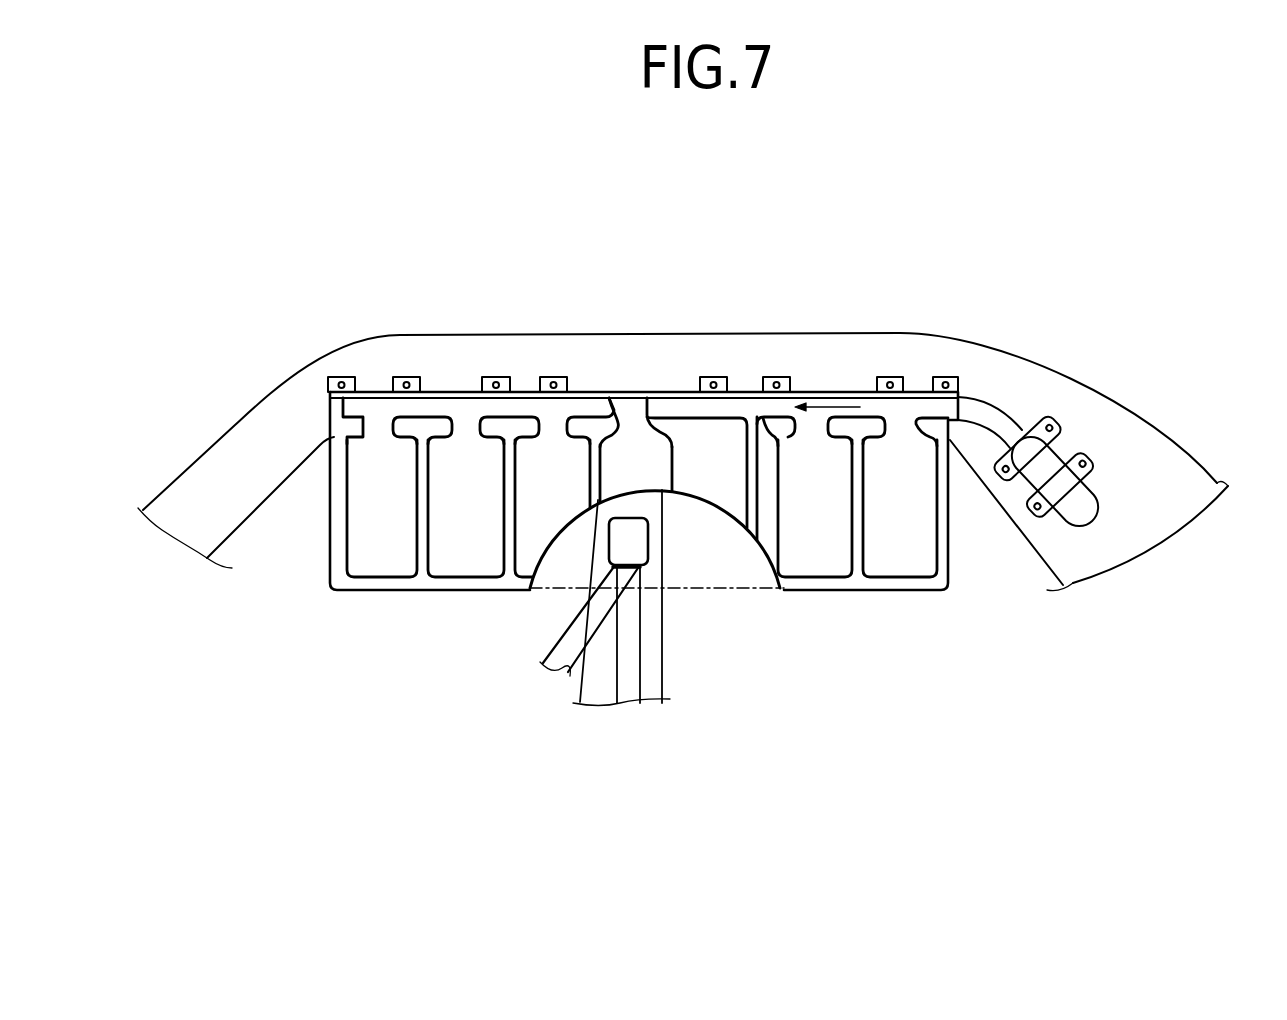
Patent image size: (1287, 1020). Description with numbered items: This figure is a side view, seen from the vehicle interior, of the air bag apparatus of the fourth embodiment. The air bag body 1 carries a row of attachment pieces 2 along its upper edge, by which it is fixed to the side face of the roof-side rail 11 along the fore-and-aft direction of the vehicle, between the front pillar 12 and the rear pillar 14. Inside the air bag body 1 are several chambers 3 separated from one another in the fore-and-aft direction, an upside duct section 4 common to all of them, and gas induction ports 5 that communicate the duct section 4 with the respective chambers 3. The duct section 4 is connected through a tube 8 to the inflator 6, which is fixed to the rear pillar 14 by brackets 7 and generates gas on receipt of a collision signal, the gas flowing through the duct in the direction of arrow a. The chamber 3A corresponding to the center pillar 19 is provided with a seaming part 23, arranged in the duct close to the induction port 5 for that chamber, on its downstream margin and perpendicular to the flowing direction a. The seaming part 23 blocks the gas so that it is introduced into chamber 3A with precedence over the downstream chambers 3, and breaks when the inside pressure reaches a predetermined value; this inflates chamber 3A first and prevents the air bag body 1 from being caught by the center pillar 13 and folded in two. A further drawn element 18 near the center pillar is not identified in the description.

The air bag body 1 is at (410, 598).
The attachment pieces 2 is at (346, 377).
The chambers 3 is at (400, 550).
The chamber 3A is at (655, 467).
The upside duct section 4 is at (677, 403).
The gas induction ports 5 is at (363, 425).
The inflator 6 is at (1094, 521).
The brackets 7 is at (1050, 428).
The tube 8 is at (998, 403).
The roof-side rail 11 is at (792, 330).
The front pillar 12 is at (245, 402).
The center pillar 13 is at (670, 655).
The rear pillar 14 is at (1192, 455).
The box 18 is at (648, 545).
The center pillar 19 is at (617, 688).
The seaming part 23 is at (618, 418).
The flowing direction a is at (826, 402).